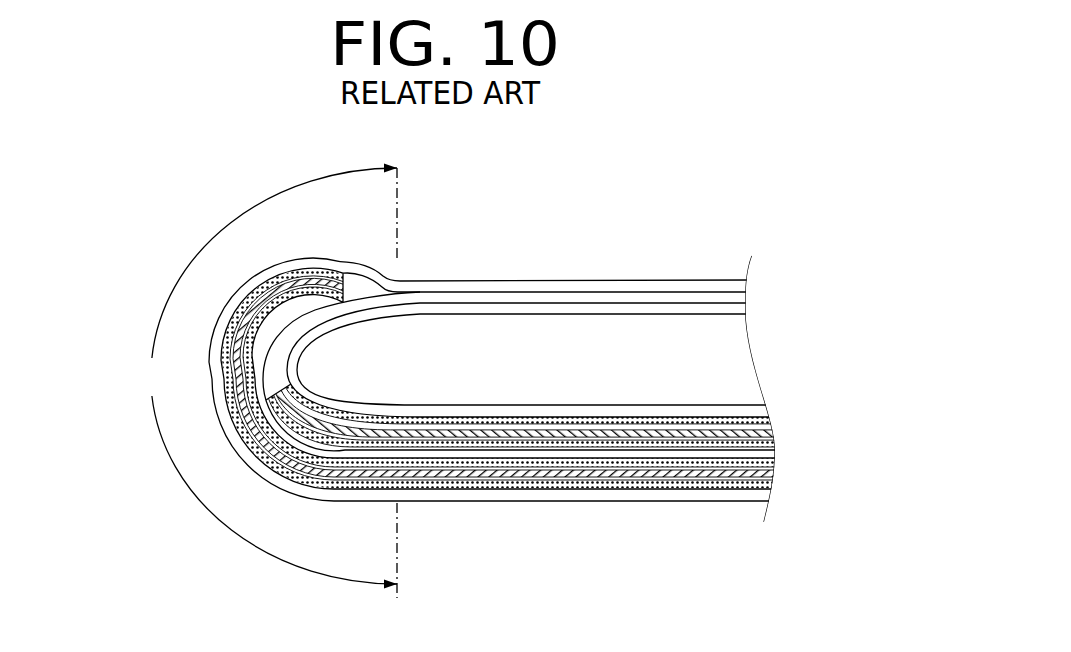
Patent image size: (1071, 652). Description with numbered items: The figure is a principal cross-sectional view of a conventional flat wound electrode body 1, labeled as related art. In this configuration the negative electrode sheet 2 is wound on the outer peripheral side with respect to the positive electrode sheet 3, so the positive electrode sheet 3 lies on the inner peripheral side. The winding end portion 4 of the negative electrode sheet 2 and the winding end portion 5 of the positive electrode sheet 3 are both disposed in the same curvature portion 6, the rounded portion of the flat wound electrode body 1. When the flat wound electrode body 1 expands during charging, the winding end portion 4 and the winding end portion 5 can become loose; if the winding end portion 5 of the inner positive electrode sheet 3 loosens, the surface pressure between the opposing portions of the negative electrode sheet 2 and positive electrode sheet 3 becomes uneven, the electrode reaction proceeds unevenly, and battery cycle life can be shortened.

The flat wound electrode body 1 is at (637, 233).
The negative electrode sheet 2 is at (487, 502).
The positive electrode sheet 3 is at (587, 453).
The winding end portion 4 is at (358, 262).
The winding end portion 5 is at (289, 382).
The curvature portion 6 is at (270, 381).